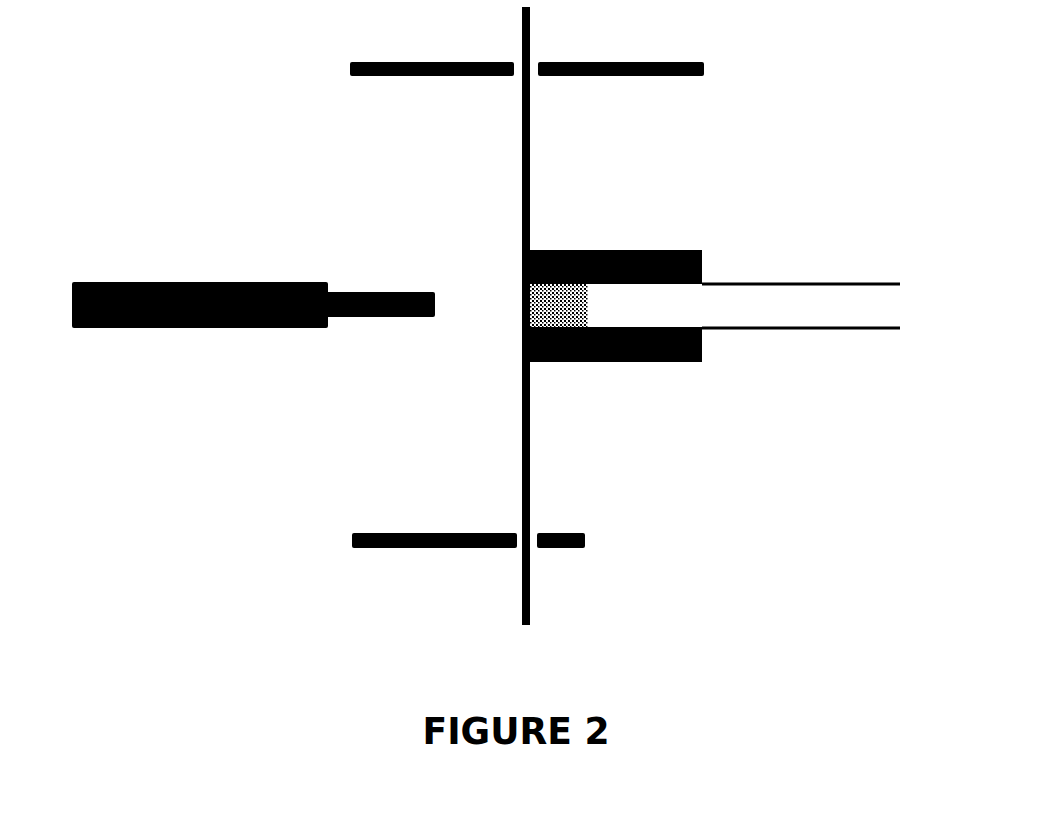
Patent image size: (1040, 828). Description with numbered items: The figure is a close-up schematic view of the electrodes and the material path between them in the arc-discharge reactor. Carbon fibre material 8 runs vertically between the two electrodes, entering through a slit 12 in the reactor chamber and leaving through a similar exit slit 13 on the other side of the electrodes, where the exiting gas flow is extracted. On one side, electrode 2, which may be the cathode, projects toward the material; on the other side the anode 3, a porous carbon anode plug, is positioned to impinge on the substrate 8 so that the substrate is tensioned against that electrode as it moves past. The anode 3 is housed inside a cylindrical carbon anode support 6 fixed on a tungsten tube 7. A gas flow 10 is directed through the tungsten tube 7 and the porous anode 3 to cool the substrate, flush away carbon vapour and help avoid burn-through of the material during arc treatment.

The electrode 2 is at (371, 320).
The anode 3 is at (540, 296).
The cylindrical carbon anode support 6 is at (638, 367).
The tungsten tube 7 is at (770, 280).
The carbon fibre material 8 is at (511, 209).
The gas flow 10 is at (893, 307).
The slit 12 is at (517, 551).
The exit slit 13 is at (515, 78).